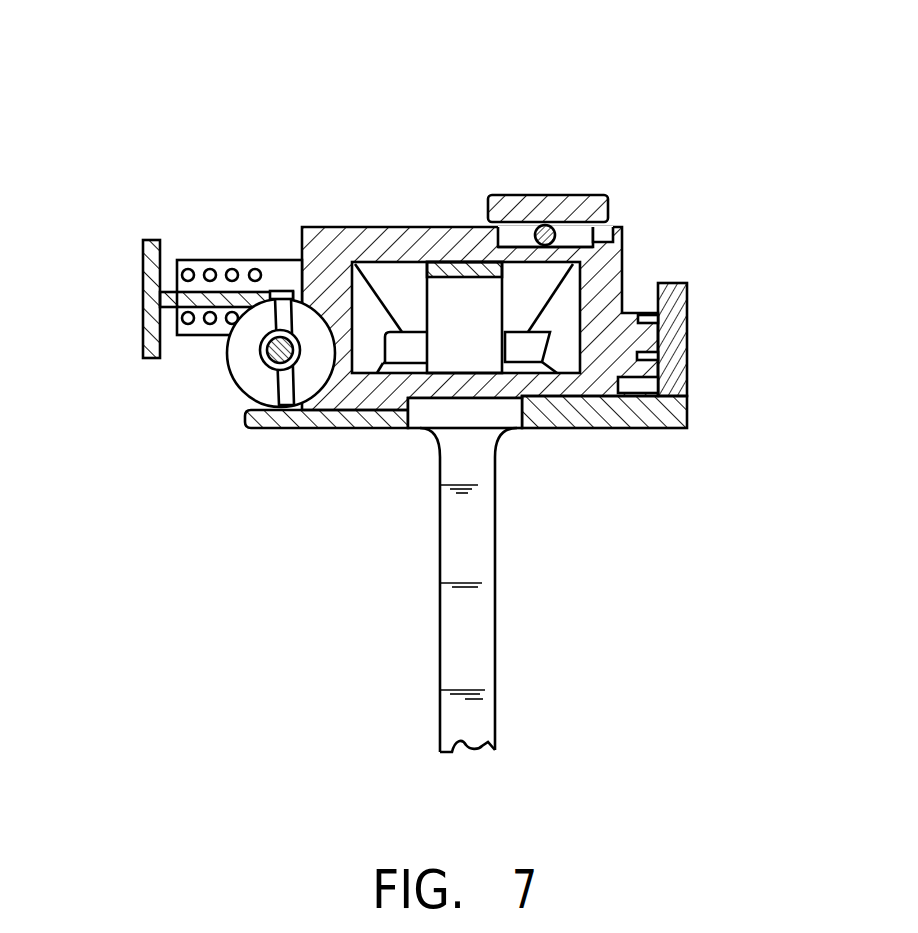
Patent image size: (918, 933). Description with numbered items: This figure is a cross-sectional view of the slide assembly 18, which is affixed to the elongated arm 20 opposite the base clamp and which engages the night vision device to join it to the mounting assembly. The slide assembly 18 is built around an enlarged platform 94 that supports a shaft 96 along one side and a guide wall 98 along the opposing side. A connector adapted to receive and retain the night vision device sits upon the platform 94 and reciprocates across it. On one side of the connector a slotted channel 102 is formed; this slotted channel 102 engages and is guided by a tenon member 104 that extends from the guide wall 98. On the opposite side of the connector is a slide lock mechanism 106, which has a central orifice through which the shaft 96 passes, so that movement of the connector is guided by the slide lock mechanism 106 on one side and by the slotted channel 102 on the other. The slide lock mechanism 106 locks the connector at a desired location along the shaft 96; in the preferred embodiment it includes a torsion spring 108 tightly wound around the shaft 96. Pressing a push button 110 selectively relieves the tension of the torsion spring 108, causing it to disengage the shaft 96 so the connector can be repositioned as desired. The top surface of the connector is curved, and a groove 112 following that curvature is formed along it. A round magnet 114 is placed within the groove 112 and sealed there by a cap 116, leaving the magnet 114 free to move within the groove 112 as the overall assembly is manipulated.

The slide assembly 18 is at (569, 213).
The elongated arm 20 is at (508, 590).
The enlarged platform 94 is at (508, 448).
The shaft 96 is at (217, 390).
The guide wall 98 is at (683, 335).
The slotted channel 102 is at (723, 319).
The tenon member 104 is at (718, 380).
The slide lock mechanism 106 is at (207, 246).
The torsion spring 108 is at (285, 328).
The push button 110 is at (156, 299).
The groove 112 is at (481, 189).
The round magnet 114 is at (555, 240).
The cap 116 is at (600, 180).